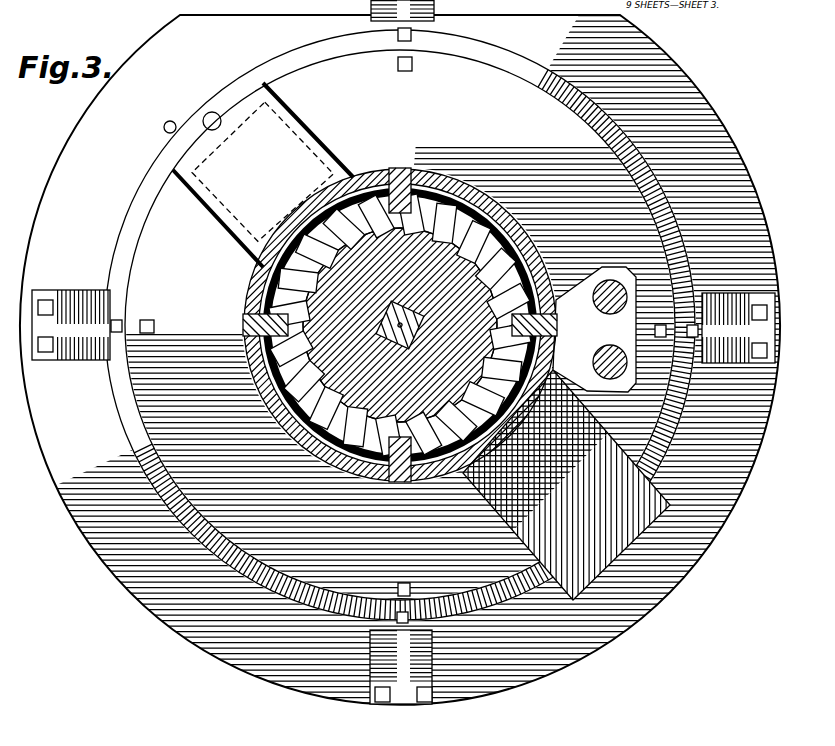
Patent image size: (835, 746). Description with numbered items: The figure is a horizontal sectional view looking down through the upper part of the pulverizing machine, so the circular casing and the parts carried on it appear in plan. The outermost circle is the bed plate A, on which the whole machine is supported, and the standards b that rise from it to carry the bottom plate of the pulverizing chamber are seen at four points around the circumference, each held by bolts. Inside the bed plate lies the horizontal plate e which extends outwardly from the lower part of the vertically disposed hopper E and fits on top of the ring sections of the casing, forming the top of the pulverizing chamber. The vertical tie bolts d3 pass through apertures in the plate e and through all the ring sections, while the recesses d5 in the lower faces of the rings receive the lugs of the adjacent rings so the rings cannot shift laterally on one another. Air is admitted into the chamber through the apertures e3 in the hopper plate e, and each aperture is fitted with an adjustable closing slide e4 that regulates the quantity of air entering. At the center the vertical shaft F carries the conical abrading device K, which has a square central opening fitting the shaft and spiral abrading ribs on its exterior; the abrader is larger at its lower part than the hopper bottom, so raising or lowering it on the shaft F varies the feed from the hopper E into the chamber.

The bed plate A is at (400, 380).
The standards b is at (95, 352).
The tie bolts d3 is at (413, 67).
The recesses d5 is at (155, 327).
The horizontal plate e is at (400, 325).
The apertures e3 is at (320, 143).
The adjustable closing slides e4 is at (270, 137).
The hopper E is at (408, 182).
The conical abrading device K is at (446, 180).
The shaft F is at (393, 333).